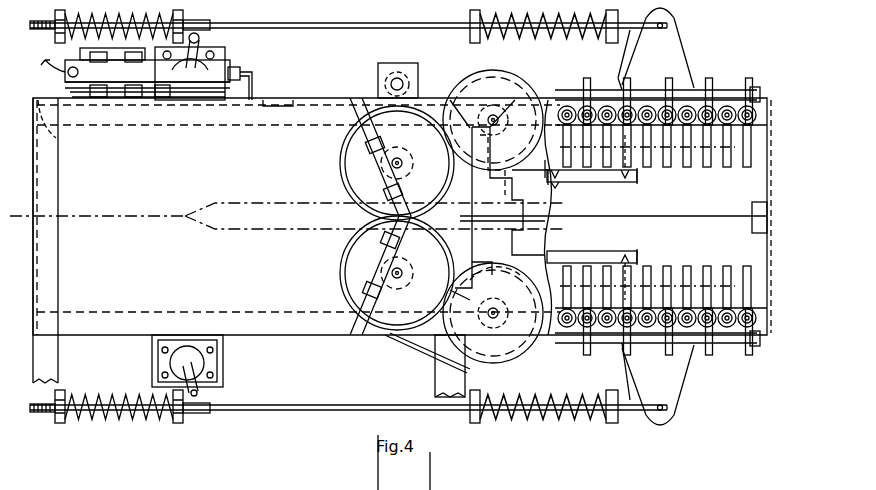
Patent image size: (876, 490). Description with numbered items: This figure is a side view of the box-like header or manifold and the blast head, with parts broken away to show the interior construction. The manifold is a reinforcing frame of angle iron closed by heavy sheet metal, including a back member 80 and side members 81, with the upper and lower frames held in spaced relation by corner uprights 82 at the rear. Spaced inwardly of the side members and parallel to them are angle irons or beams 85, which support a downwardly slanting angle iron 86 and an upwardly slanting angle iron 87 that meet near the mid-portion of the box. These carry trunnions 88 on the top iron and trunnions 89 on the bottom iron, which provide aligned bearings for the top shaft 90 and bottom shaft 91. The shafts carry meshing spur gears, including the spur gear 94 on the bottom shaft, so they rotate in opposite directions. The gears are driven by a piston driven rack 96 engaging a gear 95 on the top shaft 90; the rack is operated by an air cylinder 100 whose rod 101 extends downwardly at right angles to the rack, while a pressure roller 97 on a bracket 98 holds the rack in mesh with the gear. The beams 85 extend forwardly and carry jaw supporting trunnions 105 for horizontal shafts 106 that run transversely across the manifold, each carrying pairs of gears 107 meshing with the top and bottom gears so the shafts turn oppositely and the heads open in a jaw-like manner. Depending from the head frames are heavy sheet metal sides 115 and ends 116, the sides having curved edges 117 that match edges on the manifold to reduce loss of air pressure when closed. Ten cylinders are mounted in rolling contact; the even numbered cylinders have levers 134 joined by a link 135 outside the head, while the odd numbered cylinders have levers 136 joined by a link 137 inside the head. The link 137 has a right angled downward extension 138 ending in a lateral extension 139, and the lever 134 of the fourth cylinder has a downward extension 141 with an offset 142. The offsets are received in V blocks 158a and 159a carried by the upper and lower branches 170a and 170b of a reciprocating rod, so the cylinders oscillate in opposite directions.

The back member 80 is at (56, 138).
The side members 81 is at (205, 300).
The corner uprights 82 is at (62, 305).
The angle irons or beams 85 is at (480, 107).
The downwardly slanting angle iron 86 is at (340, 150).
The upwardly slanting angle iron 87 is at (336, 297).
The trunnions 88 is at (348, 158).
The trunnions 89 is at (380, 248).
The shaft 90 is at (392, 165).
The shaft 91 is at (392, 273).
The spur gear 94 is at (453, 250).
The gear 95 is at (462, 185).
The piston driven rack 96 is at (343, 96).
The pressure roller 97 is at (405, 84).
The bracket 98 is at (410, 63).
The air cylinder 100 is at (222, 63).
The rod 101 is at (252, 70).
The jaw supporting trunnions 105 is at (508, 294).
The shafts 106 is at (513, 325).
The gears 107 is at (545, 367).
The sides 115 is at (556, 186).
The ends 116 is at (769, 170).
The curved edges 117 is at (470, 281).
The levers 134 is at (778, 358).
The link 135 is at (736, 378).
The levers 136 is at (678, 140).
The link 137 is at (728, 257).
The right angled downward extension 138 is at (533, 170).
The lateral extension 139 is at (560, 192).
The downward extension 141 is at (636, 259).
The offset 142 is at (640, 240).
The V block 158a is at (638, 176).
The V block 159a is at (642, 264).
The upper branch 170a is at (592, 182).
The lower branch 170b is at (595, 251).